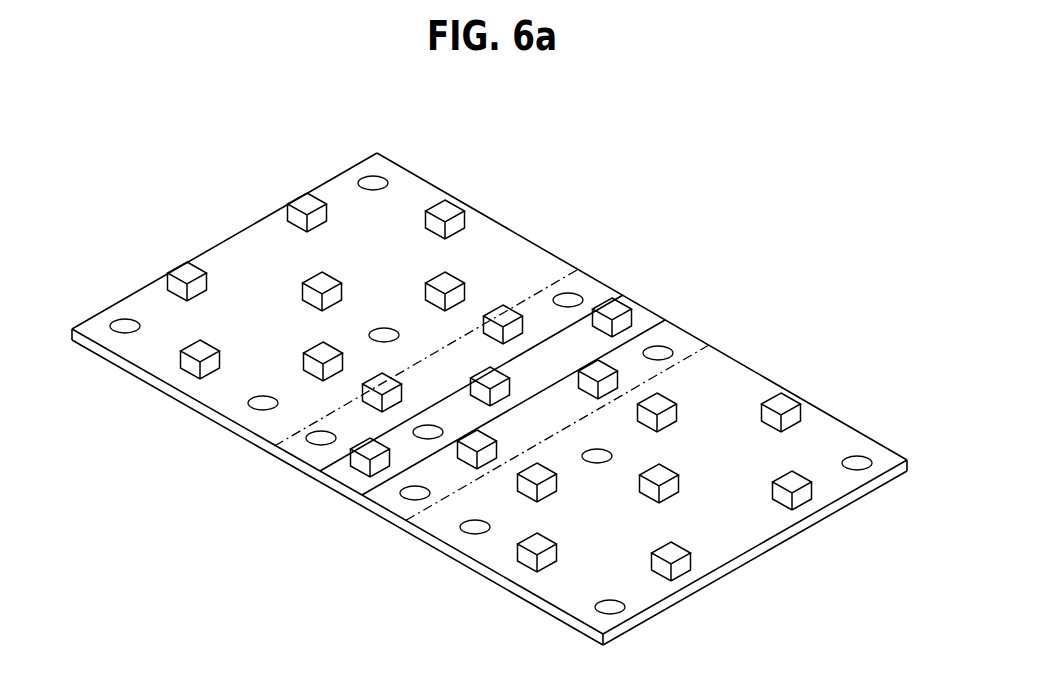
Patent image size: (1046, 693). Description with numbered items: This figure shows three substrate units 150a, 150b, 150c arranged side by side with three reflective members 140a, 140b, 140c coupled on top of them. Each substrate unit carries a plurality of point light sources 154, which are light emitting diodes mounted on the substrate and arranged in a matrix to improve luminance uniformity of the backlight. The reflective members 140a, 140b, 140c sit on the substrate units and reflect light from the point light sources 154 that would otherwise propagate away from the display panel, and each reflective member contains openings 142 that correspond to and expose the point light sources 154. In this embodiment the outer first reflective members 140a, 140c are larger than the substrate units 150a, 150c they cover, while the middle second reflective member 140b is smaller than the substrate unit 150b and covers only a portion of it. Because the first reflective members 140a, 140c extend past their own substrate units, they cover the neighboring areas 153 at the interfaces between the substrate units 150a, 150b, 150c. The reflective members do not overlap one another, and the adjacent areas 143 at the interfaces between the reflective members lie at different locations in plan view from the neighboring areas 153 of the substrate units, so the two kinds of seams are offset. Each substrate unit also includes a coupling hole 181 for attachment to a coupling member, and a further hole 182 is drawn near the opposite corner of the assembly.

The first reflective member 140a is at (410, 200).
The second reflective member 140b is at (633, 312).
The first reflective member 140c is at (737, 390).
The opening 142 is at (813, 513).
The adjacent area 143 is at (623, 340).
The substrate unit 150a is at (183, 402).
The substrate unit 150b is at (330, 497).
The substrate unit 150c is at (490, 578).
The neighboring area 153 is at (413, 515).
The point light source 154 is at (676, 560).
The coupling hole 181 is at (376, 180).
The second hole 182 is at (857, 457).